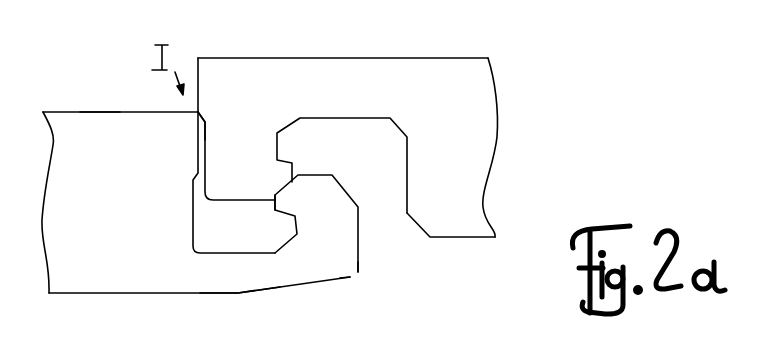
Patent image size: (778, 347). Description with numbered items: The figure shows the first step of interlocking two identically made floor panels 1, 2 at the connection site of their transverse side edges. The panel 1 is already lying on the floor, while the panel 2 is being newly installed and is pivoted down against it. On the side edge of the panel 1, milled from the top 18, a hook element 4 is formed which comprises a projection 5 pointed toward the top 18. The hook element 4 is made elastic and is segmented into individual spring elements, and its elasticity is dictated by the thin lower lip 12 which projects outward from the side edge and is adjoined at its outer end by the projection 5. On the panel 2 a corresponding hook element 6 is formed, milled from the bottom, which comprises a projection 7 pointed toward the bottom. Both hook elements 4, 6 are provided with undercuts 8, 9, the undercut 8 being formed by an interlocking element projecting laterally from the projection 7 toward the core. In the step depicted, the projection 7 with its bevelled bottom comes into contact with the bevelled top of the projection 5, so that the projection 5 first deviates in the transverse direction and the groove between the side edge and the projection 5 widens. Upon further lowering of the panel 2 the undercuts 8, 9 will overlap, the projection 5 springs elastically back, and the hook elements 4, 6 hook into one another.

The panel 1 is at (125, 208).
The panel 2 is at (455, 105).
The hook element 4 is at (338, 263).
The projection 5 is at (338, 248).
The hook element 6 is at (223, 135).
The projection 7 is at (250, 183).
The undercut 8 is at (283, 140).
The undercut 9 is at (285, 225).
The lower lip 12 is at (243, 275).
The top 18 is at (96, 106).